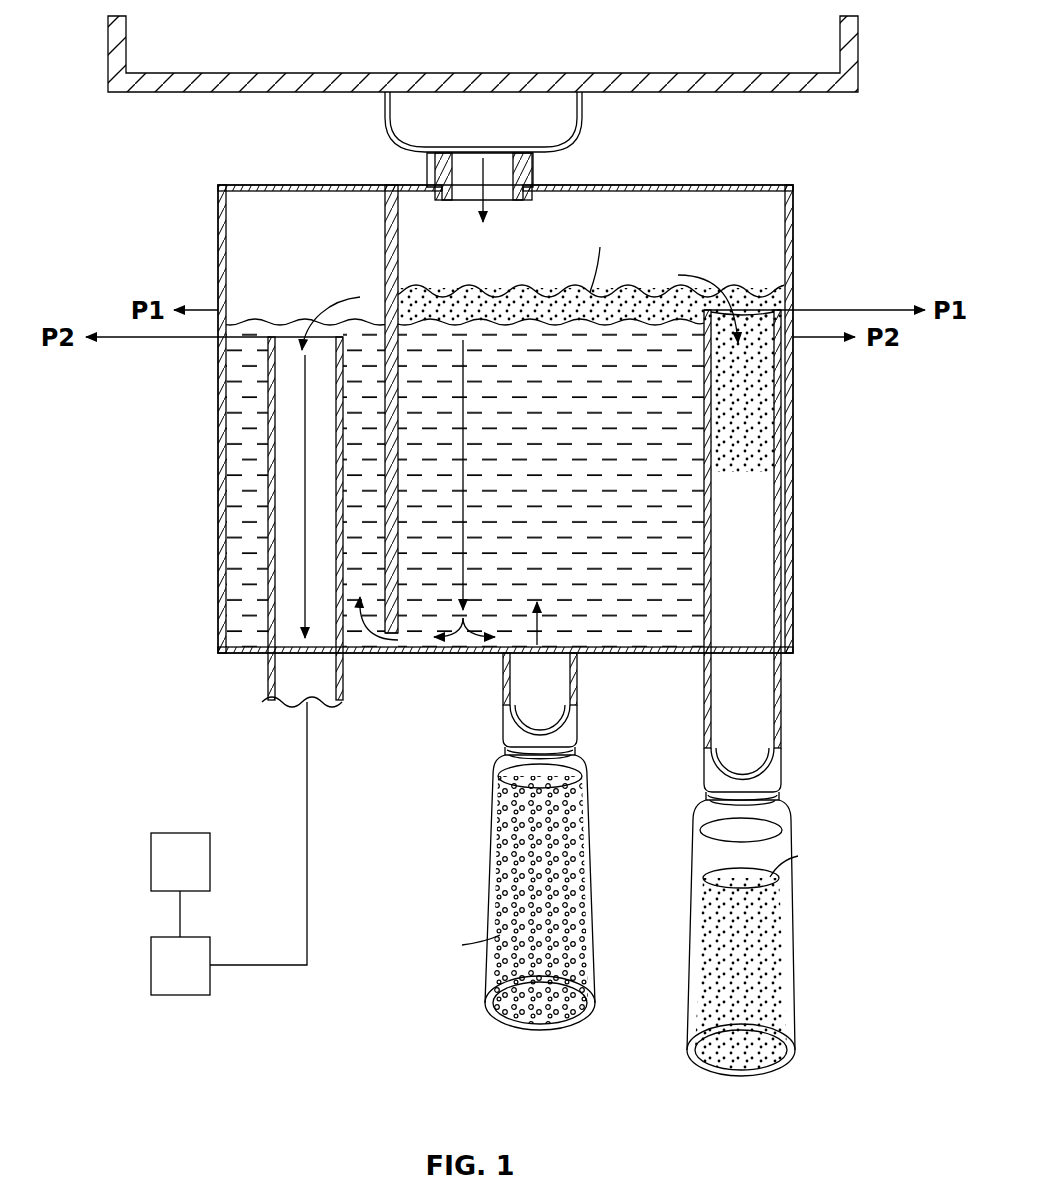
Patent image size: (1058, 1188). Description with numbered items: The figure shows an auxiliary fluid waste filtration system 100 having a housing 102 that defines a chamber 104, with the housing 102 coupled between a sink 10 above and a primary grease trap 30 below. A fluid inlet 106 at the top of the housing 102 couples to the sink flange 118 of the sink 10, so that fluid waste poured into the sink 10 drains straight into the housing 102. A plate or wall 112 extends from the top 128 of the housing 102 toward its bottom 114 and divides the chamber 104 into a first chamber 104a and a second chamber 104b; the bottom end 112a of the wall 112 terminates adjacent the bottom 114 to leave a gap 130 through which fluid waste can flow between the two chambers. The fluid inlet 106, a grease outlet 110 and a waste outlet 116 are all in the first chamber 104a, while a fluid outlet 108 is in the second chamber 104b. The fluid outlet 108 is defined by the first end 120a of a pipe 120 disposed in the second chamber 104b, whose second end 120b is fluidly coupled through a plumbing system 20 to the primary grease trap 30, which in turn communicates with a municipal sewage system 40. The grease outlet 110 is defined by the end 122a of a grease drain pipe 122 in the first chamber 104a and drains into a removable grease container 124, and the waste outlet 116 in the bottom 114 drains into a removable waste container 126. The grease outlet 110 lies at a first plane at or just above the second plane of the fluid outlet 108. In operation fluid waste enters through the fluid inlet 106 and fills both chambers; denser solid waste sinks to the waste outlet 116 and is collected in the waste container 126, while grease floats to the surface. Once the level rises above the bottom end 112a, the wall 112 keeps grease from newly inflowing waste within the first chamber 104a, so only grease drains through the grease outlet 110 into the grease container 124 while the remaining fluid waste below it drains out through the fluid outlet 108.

The sink 10 is at (862, 40).
The plumbing system 20 is at (180, 915).
The primary grease trap 30 is at (167, 982).
The municipal sewage system 40 is at (167, 878).
The auxiliary fluid waste filtration system 100 is at (812, 195).
The housing 102 is at (793, 275).
The chamber 104 is at (646, 208).
The first chamber 104a is at (740, 203).
The second chamber 104b is at (247, 208).
The fluid inlet 106 is at (497, 185).
The fluid outlet 108 is at (283, 342).
The grease outlet 110 is at (745, 318).
The wall 112 is at (385, 267).
The bottom end 112a is at (398, 447).
The bottom 114 is at (400, 655).
The waste outlet 116 is at (555, 668).
The sink flange 118 is at (388, 108).
The pipe 120 is at (270, 470).
The first end 120a is at (268, 352).
The second end 120b is at (268, 678).
The grease drain pipe 122 is at (781, 480).
The end 122a is at (785, 345).
The grease container 124 is at (792, 970).
The waste container 126 is at (497, 822).
The top 128 is at (232, 192).
The gap 130 is at (395, 640).